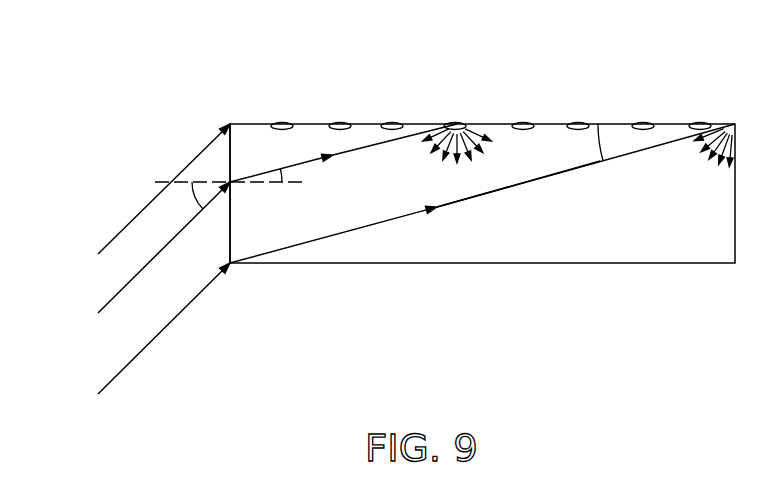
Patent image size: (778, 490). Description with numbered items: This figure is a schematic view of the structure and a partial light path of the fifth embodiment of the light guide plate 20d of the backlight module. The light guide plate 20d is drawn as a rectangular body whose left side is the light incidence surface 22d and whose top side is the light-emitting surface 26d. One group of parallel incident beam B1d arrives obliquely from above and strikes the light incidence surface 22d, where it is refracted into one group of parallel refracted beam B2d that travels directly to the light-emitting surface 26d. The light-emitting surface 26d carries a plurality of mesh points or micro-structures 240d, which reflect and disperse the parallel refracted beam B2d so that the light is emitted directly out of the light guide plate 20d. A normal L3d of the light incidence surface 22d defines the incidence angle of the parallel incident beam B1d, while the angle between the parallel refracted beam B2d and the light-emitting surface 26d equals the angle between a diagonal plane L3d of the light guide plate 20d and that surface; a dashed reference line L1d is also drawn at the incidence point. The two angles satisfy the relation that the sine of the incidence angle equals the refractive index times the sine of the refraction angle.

The light guide plate 20d is at (683, 177).
The light incidence surface 22d is at (231, 229).
The light-emitting surface 26d is at (309, 123).
The micro-structures 240d is at (525, 123).
The parallel incident beam B1d is at (87, 245).
The parallel refracted beam B2d is at (482, 193).
The reference line L1d is at (209, 170).
The normal of the light incidence surface / diagonal plane L3d is at (507, 185).